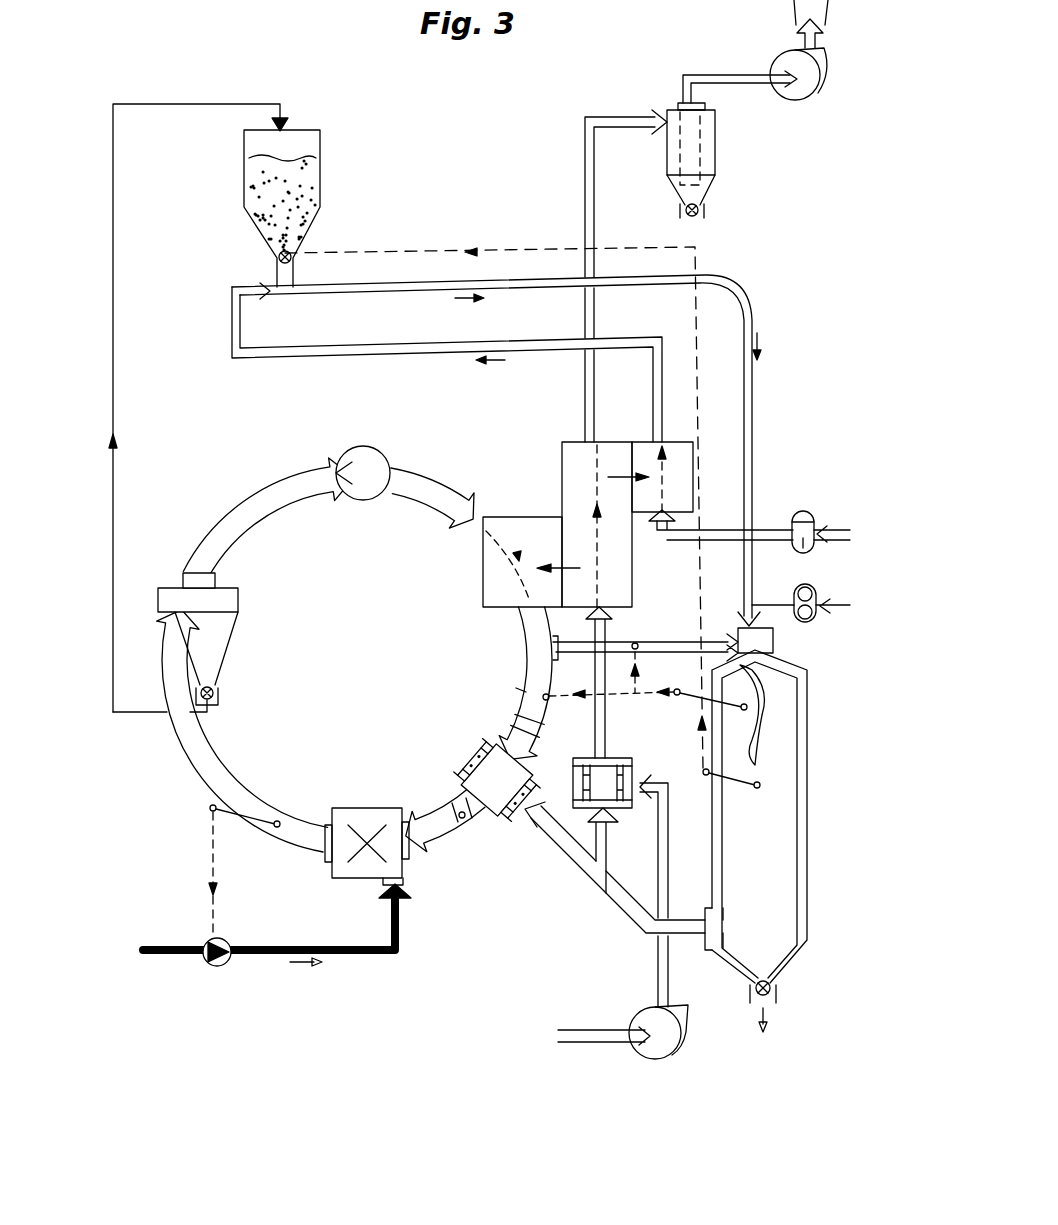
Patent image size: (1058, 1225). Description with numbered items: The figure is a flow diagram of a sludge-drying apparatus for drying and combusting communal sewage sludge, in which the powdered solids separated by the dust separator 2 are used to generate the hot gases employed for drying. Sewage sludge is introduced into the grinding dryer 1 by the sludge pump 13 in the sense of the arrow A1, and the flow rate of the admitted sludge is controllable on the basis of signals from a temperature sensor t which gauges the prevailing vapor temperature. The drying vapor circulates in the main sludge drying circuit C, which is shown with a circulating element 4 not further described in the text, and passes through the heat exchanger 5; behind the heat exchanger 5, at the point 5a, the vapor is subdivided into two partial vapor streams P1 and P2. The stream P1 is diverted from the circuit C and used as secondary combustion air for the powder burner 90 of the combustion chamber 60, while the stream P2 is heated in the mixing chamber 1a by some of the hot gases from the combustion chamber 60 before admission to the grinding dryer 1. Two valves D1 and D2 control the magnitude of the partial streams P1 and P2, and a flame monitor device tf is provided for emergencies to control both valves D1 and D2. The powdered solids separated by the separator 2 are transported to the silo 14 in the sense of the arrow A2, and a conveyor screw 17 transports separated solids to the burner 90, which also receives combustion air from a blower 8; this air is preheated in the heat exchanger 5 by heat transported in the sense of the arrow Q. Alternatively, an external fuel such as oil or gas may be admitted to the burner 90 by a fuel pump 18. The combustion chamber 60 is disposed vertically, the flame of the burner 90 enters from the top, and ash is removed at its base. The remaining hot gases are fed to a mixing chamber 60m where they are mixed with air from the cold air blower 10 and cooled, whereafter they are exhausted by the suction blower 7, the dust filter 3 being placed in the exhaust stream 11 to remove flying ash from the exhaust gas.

The grinding dryer 1 is at (352, 808).
The mixing chamber 1a is at (480, 760).
The dust separator 2 is at (226, 650).
The dust filter 3 is at (717, 153).
The circulating fan 4 is at (366, 499).
The heat exchanger 5 is at (483, 578).
The point 5a is at (572, 683).
The suction blower 7 is at (778, 56).
The blower 8 is at (803, 511).
The cold air blower 10 is at (641, 1012).
The exhaust stream 11 is at (595, 195).
The sludge pump 13 is at (226, 946).
The silo 14 is at (312, 188).
The conveyor screw 17 is at (288, 296).
The fuel pump 18 is at (815, 597).
The combustion chamber 60 is at (805, 758).
The mixing chamber 60m is at (622, 757).
The powder burner 90 is at (746, 626).
The arrow A1 is at (313, 946).
The arrow A2 is at (143, 713).
The main sludge drying circuit C is at (258, 495).
The valve D1 is at (635, 642).
The valve D2 is at (542, 696).
The partial vapor stream P1 is at (667, 640).
The partial vapor stream P2 is at (548, 716).
The arrow Q is at (593, 510).
The temperature sensor t is at (477, 848).
The flame monitor device tf is at (709, 714).